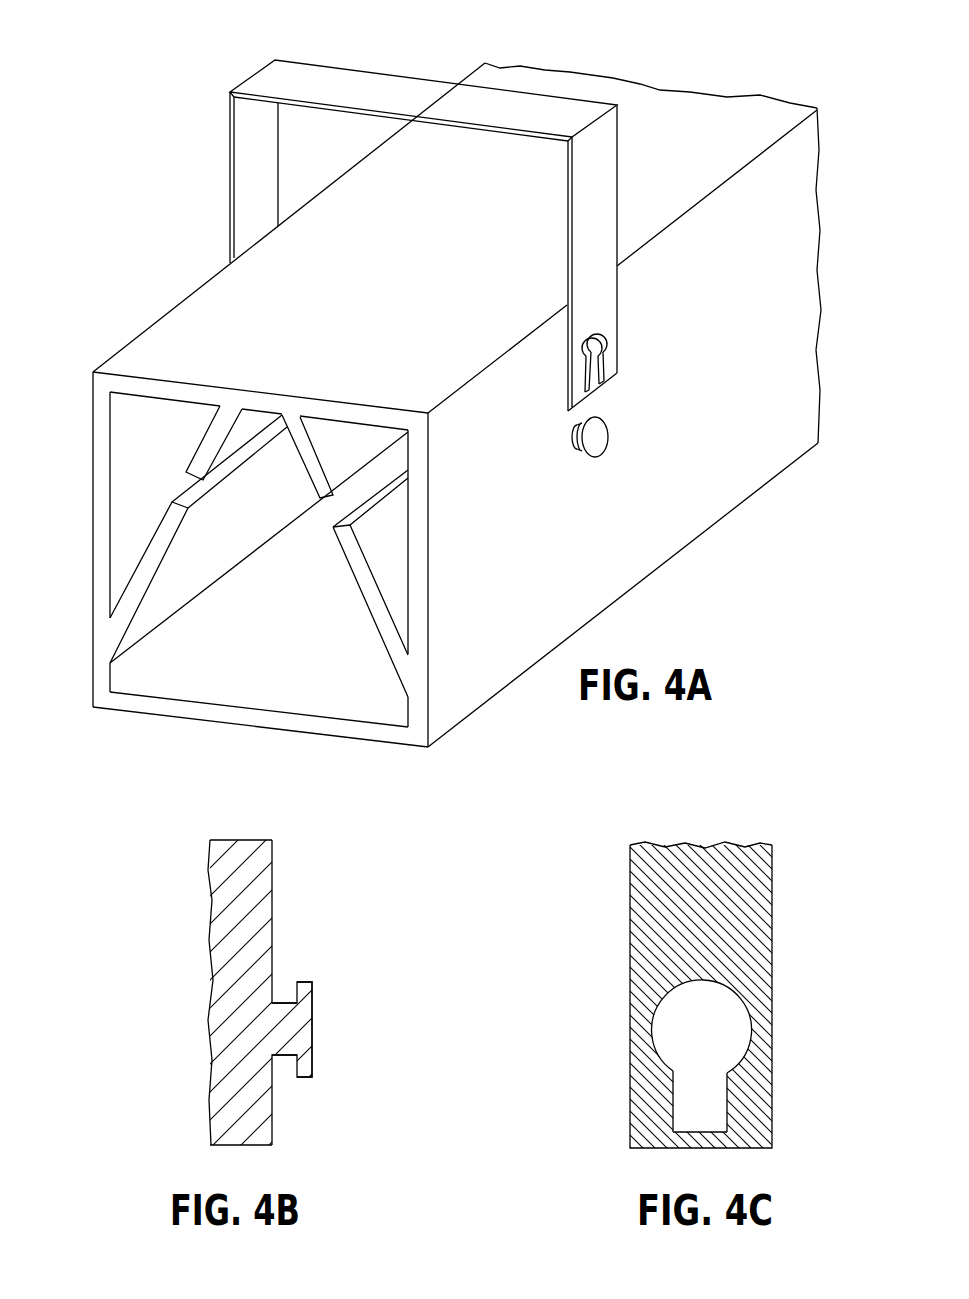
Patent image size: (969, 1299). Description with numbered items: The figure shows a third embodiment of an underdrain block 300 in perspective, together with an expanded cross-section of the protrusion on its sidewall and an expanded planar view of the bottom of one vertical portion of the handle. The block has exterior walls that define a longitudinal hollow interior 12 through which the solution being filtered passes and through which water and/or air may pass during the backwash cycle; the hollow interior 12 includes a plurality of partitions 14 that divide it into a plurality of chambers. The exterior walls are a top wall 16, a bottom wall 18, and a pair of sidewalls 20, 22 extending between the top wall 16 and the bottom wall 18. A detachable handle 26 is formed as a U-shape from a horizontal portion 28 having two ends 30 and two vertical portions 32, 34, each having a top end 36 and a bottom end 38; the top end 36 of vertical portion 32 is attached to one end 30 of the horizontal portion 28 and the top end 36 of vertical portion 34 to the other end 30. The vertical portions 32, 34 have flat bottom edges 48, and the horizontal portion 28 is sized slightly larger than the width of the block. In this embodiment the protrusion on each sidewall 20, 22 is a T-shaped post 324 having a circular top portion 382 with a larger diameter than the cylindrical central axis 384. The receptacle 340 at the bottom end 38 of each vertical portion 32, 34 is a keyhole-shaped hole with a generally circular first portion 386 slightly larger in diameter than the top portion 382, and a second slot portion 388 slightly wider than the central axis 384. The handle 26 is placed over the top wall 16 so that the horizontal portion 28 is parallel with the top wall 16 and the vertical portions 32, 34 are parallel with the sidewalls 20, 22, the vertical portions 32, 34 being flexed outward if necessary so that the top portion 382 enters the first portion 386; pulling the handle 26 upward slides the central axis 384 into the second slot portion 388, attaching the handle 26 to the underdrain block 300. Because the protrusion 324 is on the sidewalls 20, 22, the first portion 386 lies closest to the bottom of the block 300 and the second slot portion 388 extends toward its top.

In FIG. 4A, the longitudinal hollow interior 12 is at (281, 566).
In FIG. 4A, the partitions 14 is at (147, 572).
In FIG. 4A, the top wall 16 is at (320, 410).
In FIG. 4A, the bottom wall 18 is at (250, 726).
In FIG. 4A, the sidewall 20 is at (428, 574).
In FIG. 4A, the sidewall 22 is at (100, 552).
In FIG. 4A, the detachable handle 26 is at (540, 213).
In FIG. 4A, the horizontal portion 28 is at (396, 93).
In FIG. 4A, the ends of the horizontal portion 30 is at (276, 74).
In FIG. 4A, the vertical portion 32 is at (597, 178).
In FIG. 4C, the vertical portion 32 is at (604, 934).
In FIG. 4A, the vertical portion 34 is at (252, 205).
In FIG. 4A, the top end 36 is at (245, 147).
In FIG. 4A, the bottom end 38 is at (605, 381).
In FIG. 4C, the bottom end 38 is at (705, 1071).
In FIG. 4A, the bottom edge 48 is at (585, 399).
In FIG. 4C, the bottom edge 48 is at (708, 1150).
In FIG. 4A, the underdrain block 300 is at (388, 214).
In FIG. 4A, the T-shaped post 324 is at (621, 444).
In FIG. 4B, the T-shaped post 324 is at (346, 986).
In FIG. 4A, the receptacle 340 is at (605, 361).
In FIG. 4C, the receptacle 340 is at (701, 1071).
In FIG. 4A, the circular top portion 382 is at (598, 438).
In FIG. 4B, the circular top portion 382 is at (313, 1042).
In FIG. 4A, the cylindrical central axis 384 is at (575, 443).
In FIG. 4B, the cylindrical central axis 384 is at (280, 995).
In FIG. 4A, the first portion 386 is at (600, 342).
In FIG. 4C, the first portion 386 is at (705, 1012).
In FIG. 4A, the second slot portion 388 is at (590, 368).
In FIG. 4C, the second slot portion 388 is at (698, 1102).